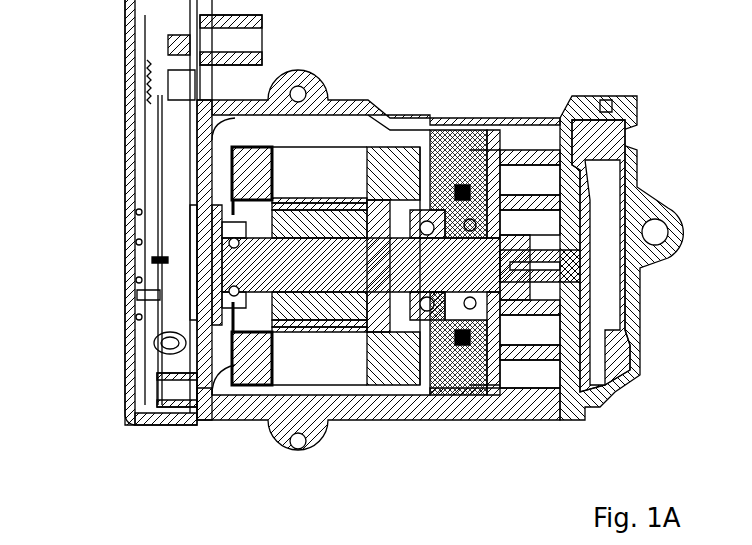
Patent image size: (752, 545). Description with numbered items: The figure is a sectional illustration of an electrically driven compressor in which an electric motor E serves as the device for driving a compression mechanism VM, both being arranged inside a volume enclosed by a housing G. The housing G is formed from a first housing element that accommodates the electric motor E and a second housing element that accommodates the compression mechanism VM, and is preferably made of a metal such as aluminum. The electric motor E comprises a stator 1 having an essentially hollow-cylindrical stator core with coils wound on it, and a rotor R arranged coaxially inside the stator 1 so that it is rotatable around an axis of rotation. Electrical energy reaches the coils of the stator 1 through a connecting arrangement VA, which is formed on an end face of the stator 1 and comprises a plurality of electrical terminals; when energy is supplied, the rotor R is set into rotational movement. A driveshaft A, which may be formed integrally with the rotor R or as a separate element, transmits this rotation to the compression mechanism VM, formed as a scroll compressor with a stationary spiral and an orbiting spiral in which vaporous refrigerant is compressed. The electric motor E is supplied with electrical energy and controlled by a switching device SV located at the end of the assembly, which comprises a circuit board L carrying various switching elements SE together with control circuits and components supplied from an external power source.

The electric motor E is at (314, 128).
The housing G is at (372, 96).
The compression mechanism VM is at (525, 115).
The connecting arrangement VA is at (130, 150).
The switching elements SE is at (124, 294).
The circuit board L is at (122, 350).
The switching device SV is at (48, 318).
The driveshaft A is at (255, 352).
The rotor R is at (326, 332).
The stator 1 is at (438, 420).